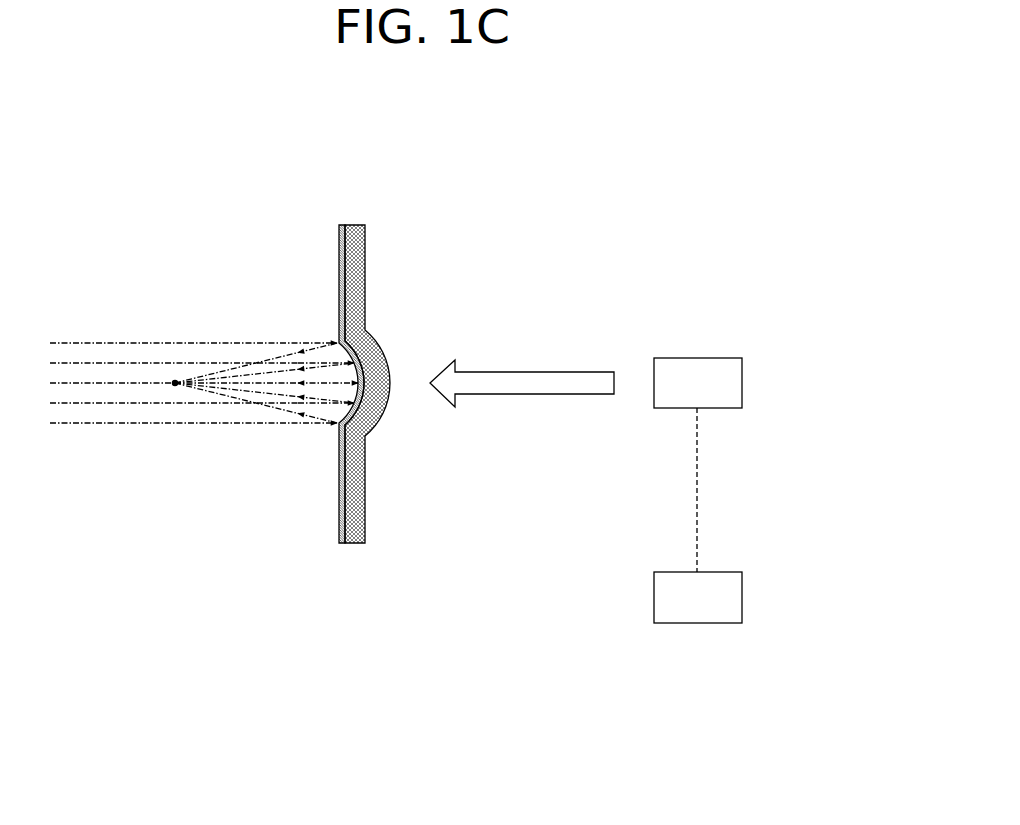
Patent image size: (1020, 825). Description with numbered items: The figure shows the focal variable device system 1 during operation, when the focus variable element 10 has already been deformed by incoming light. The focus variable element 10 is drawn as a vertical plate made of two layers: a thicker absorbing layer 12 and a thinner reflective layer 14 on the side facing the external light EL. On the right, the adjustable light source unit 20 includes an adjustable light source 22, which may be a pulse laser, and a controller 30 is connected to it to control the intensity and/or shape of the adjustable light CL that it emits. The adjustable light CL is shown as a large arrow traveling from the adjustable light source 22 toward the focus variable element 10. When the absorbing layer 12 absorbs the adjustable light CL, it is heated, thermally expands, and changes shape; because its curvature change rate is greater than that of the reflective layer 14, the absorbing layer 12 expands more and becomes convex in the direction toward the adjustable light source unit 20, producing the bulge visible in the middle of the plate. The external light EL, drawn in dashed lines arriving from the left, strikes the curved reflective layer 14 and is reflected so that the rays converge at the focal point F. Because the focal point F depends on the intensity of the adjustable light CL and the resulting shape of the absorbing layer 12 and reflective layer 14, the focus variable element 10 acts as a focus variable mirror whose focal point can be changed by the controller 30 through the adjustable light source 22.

The focal variable device system 1 is at (798, 138).
The focus variable element 10 is at (357, 216).
The absorbing layer 12 is at (366, 250).
The reflective layer 14 is at (344, 290).
The adjustable light source unit 20 is at (718, 346).
The adjustable light source 22 is at (742, 382).
The controller 30 is at (742, 597).
The external light EL is at (98, 340).
The focal point F is at (176, 378).
The adjustable light CL is at (555, 371).